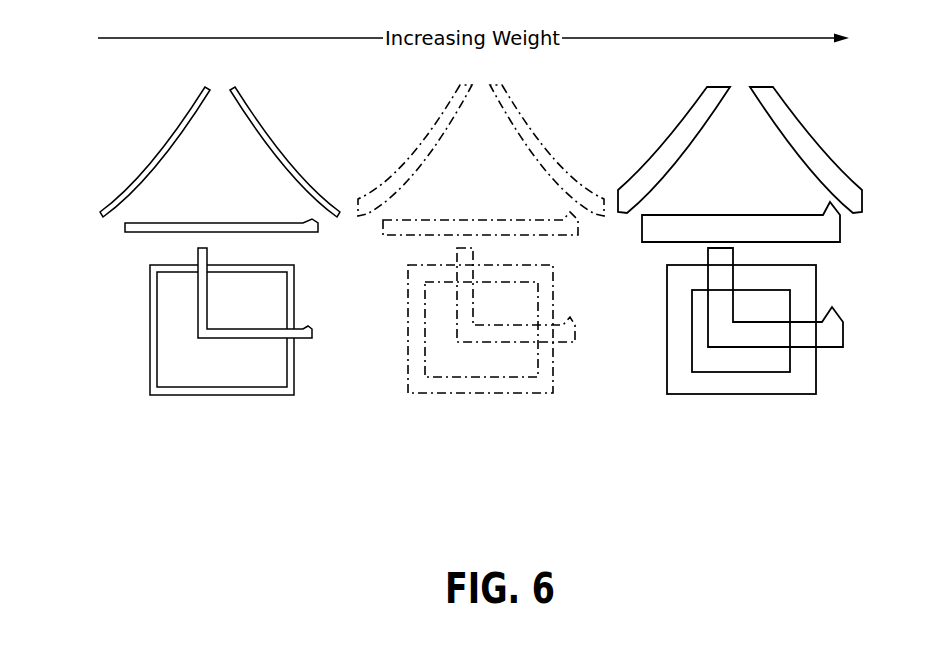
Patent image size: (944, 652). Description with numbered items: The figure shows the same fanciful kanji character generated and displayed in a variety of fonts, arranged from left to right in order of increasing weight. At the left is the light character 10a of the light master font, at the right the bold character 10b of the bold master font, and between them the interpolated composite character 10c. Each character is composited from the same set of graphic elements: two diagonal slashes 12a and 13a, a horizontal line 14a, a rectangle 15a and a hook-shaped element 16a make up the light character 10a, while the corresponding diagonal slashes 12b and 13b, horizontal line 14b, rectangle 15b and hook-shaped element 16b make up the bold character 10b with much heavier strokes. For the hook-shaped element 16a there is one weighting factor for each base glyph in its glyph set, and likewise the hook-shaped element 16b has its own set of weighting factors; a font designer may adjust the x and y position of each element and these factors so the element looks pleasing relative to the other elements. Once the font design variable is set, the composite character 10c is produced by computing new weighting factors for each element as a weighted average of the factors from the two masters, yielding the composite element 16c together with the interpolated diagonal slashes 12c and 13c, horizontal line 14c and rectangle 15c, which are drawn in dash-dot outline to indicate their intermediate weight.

The light character 10a is at (191, 294).
The bold character 10b is at (756, 289).
The composite character 10c is at (487, 292).
The diagonal slash 12a is at (117, 198).
The diagonal slash 12b is at (692, 117).
The diagonal slash 12c is at (440, 117).
The diagonal slash 13a is at (253, 122).
The diagonal slash 13b is at (792, 117).
The diagonal slash 13c is at (517, 113).
The horizontal line 14a is at (142, 233).
The horizontal line 14b is at (757, 215).
The horizontal line 14c is at (493, 218).
The rectangle 15a is at (232, 395).
The rectangle 15b is at (794, 395).
The rectangle 15c is at (528, 394).
The hook-shaped element 16a is at (213, 328).
The hook-shaped element 16b is at (845, 332).
The composite element 16c is at (577, 333).